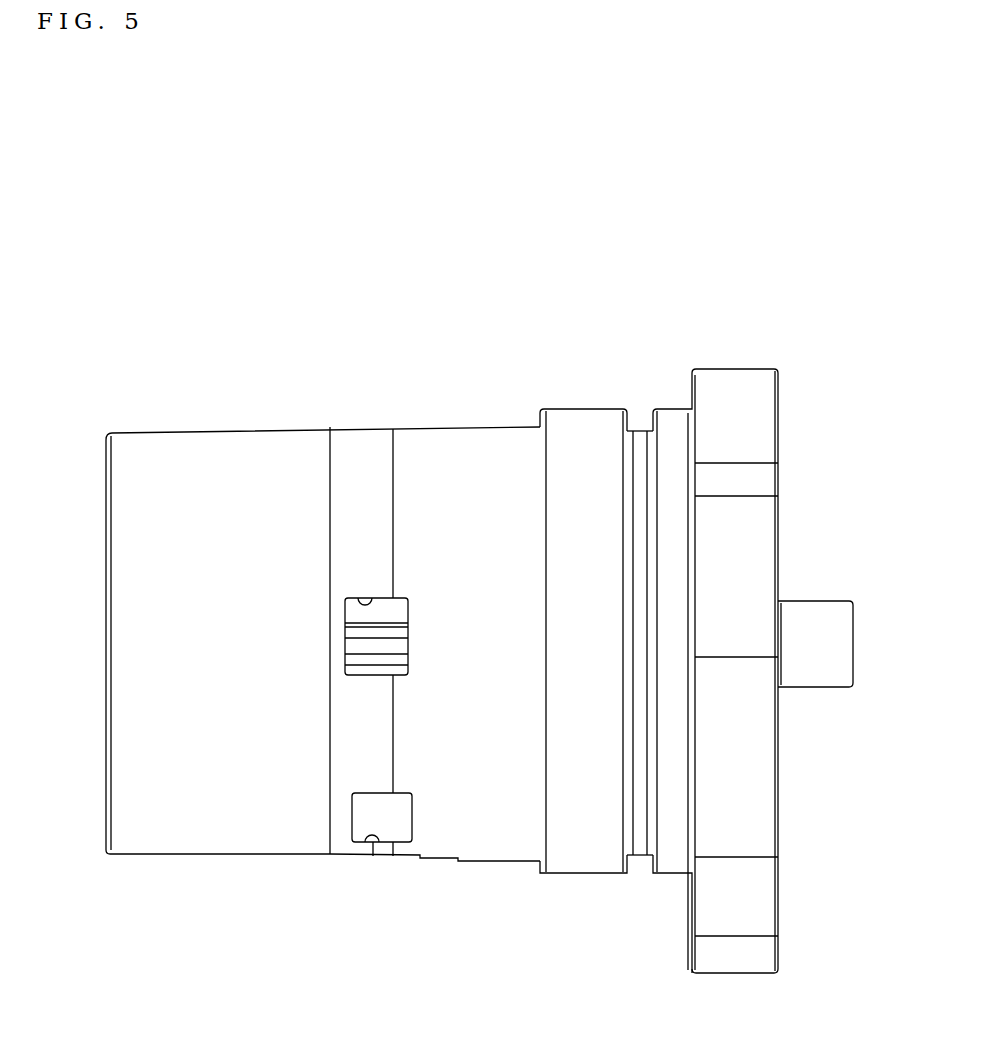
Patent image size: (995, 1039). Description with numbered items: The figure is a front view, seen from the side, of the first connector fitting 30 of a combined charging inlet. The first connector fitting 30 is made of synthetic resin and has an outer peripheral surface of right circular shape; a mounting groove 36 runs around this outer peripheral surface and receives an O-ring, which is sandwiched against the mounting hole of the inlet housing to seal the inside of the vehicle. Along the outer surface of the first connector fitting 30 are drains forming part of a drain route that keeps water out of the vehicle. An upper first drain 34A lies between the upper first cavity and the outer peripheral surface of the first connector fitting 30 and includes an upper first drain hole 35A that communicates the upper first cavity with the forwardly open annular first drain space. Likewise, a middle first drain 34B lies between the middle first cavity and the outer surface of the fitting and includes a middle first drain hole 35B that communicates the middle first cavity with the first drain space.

The first connector fitting 30 is at (444, 284).
The upper first drain 34A is at (365, 600).
The middle first drain 34B is at (377, 842).
The upper first drain hole 35A is at (383, 640).
The middle first drain hole 35B is at (390, 820).
The mounting groove 36 is at (637, 430).